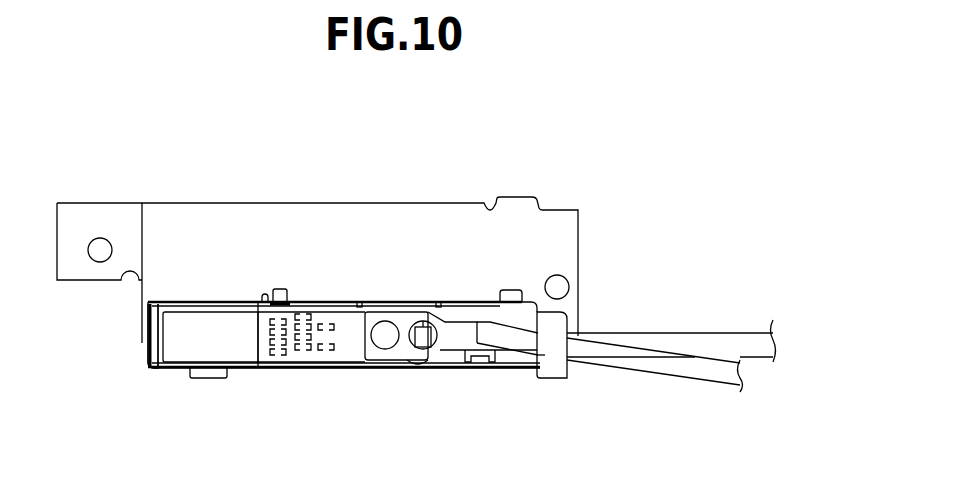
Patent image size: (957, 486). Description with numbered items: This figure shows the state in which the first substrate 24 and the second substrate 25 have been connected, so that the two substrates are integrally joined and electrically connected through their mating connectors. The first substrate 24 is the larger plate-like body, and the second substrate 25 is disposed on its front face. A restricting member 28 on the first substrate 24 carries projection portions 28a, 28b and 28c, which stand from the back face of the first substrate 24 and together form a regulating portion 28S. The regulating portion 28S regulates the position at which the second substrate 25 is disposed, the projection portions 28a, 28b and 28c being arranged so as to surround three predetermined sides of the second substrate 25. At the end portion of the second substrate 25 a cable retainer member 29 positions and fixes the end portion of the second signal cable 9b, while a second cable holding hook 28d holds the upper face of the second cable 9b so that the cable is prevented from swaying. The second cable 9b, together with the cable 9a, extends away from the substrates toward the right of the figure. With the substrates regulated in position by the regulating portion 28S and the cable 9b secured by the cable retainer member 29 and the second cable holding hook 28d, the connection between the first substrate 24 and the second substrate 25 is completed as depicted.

The first substrate 24 is at (263, 225).
The second substrate 25 is at (237, 330).
The restricting member 28 is at (314, 291).
The regulating portion 28S is at (157, 297).
The projection portion 28a is at (370, 298).
The projection portion 28b is at (335, 372).
The projection portion 28c is at (145, 350).
The second cable holding hook 28d is at (553, 343).
The cable retainer member 29 is at (408, 317).
The optical fiber cable 9a is at (738, 343).
The second signal cable 9b is at (692, 373).